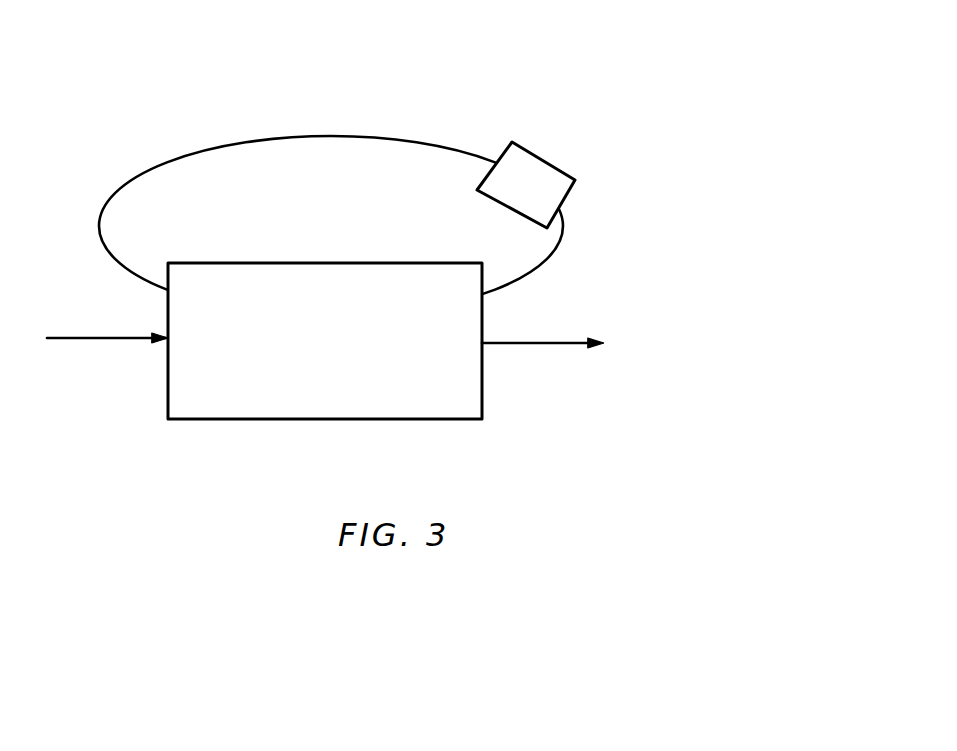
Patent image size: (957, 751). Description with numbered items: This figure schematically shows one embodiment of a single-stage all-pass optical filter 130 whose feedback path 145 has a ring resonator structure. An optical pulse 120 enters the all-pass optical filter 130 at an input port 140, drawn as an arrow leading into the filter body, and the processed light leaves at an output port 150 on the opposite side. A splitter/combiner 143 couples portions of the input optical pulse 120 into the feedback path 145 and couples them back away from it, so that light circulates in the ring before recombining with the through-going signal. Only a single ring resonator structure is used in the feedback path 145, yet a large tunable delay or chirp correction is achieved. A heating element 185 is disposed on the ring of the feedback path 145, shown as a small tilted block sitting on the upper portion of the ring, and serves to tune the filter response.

The optical pulse 120 is at (86, 338).
The all-pass optical filter 130 is at (247, 492).
The input port 140 is at (154, 358).
The splitter/combiner 143 is at (482, 393).
The feedback path 145 is at (114, 194).
The output port 150 is at (528, 345).
The heating element 185 is at (563, 126).